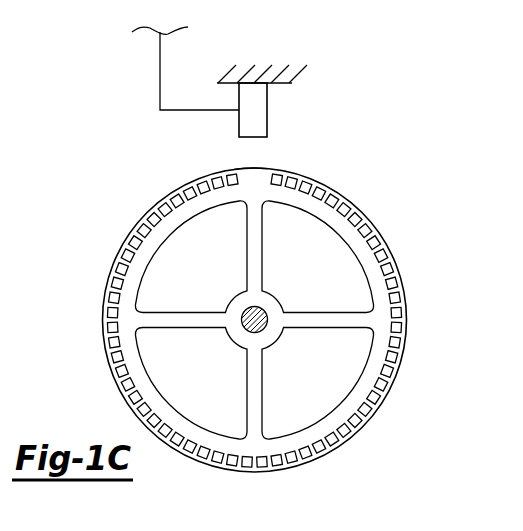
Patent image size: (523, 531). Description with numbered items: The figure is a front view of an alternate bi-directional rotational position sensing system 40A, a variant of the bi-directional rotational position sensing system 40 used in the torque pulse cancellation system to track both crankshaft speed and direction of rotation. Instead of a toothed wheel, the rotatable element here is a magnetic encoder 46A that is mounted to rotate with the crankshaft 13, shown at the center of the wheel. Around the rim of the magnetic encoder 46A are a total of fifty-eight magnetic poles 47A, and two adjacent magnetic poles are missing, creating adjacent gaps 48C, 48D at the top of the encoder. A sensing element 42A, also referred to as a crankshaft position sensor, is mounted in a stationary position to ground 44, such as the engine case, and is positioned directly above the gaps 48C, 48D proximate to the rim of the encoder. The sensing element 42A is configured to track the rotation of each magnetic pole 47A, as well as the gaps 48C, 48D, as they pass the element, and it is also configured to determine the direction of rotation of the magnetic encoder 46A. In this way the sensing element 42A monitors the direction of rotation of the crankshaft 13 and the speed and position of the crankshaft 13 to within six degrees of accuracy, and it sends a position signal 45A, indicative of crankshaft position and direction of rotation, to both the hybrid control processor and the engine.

The crankshaft 13 is at (246, 312).
The bi-directional rotational position sensing system 40 is at (160, 131).
The alternate bi-directional rotational position sensing system 40A is at (93, 262).
The sensing element 42A is at (268, 110).
The ground 44 is at (298, 75).
The position signal 45A is at (188, 110).
The magnetic encoder 46A is at (386, 198).
The magnetic poles 47A is at (133, 222).
The gap 48C is at (234, 168).
The gap 48D is at (268, 168).